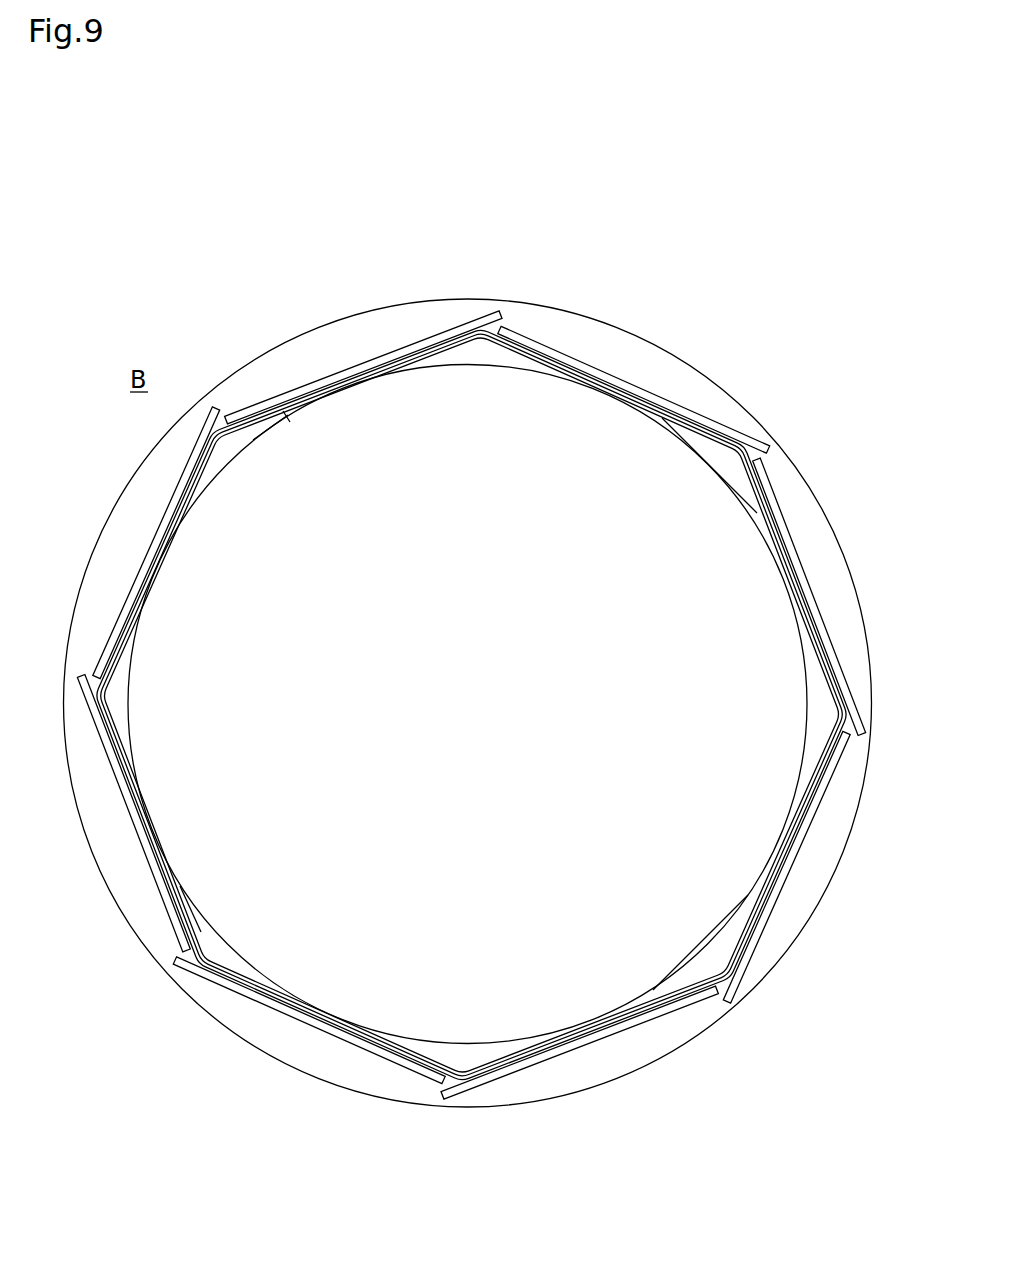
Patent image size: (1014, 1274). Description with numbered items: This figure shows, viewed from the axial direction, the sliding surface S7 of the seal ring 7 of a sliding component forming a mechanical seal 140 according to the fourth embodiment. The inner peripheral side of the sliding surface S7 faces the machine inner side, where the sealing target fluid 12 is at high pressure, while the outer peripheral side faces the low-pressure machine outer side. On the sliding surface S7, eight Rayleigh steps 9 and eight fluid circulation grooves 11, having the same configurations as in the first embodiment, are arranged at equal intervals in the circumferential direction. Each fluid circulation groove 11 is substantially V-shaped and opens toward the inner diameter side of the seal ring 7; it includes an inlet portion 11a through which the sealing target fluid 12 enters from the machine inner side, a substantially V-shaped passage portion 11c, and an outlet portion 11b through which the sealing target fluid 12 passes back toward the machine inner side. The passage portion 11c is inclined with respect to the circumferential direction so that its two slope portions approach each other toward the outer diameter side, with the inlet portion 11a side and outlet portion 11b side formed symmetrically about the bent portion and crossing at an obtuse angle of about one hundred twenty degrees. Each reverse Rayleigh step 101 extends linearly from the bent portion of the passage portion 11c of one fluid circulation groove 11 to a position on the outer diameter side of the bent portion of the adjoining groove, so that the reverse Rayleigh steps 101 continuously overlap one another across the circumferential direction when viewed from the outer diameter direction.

The mechanical seal 140 is at (724, 275).
The seal ring 7 is at (452, 318).
The reverse Rayleigh step 101 is at (402, 352).
The fluid circulation groove 11 is at (471, 704).
The inlet portion 11a is at (397, 476).
The outlet portion 11b is at (398, 364).
The passage portion 11c is at (472, 342).
The Rayleigh step 9 is at (222, 442).
The sliding surface S7 is at (790, 478).
The sealing target fluid 12 is at (462, 708).